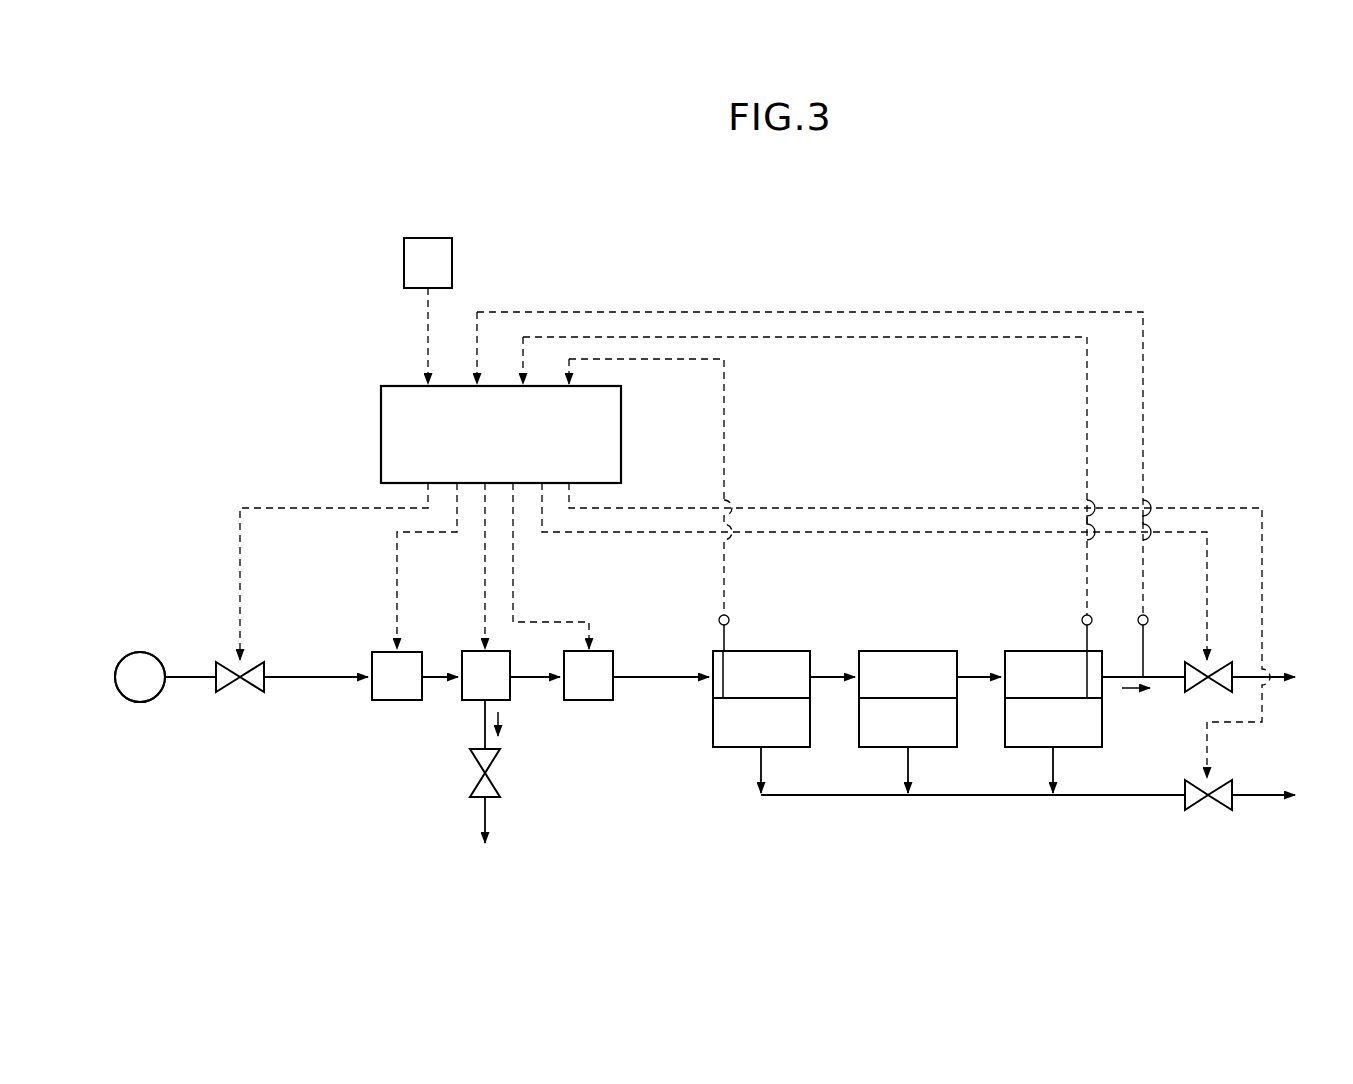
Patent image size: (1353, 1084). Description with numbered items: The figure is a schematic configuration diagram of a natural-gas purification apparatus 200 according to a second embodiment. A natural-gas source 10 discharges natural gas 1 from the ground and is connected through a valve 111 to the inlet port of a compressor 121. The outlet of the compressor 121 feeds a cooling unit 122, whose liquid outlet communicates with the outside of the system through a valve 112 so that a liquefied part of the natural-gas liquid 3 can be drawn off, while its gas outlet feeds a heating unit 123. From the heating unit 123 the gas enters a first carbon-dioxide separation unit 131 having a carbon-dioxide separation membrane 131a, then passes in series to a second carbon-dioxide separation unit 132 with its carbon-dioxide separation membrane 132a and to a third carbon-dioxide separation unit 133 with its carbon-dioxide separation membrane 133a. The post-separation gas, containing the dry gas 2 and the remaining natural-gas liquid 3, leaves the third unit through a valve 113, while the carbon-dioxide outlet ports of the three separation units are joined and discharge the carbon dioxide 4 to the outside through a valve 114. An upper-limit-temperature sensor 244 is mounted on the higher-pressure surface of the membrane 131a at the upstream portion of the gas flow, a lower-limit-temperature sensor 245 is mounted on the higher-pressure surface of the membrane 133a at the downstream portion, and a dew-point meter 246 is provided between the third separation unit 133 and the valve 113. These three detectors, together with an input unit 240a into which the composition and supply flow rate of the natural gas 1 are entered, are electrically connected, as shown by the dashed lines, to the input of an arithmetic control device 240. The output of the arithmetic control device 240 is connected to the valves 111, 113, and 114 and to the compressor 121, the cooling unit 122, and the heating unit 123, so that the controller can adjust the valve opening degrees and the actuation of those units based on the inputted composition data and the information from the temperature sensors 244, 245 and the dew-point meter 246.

The natural gas 1 is at (141, 665).
The dry gas 2 is at (1135, 752).
The natural-gas liquid 3 is at (688, 697).
The carbon dioxide 4 is at (1090, 817).
The natural-gas source 10 is at (140, 702).
The valve 111 is at (262, 690).
The valve 112 is at (500, 790).
The valve 113 is at (1225, 660).
The valve 114 is at (1228, 808).
The compressor 121 is at (397, 702).
The cooling unit 122 is at (510, 690).
The heating unit 123 is at (608, 652).
The first carbon-dioxide separation unit 131 is at (757, 650).
The carbon-dioxide separation membrane 131a is at (778, 697).
The second carbon-dioxide separation unit 132 is at (895, 650).
The carbon-dioxide separation membrane 132a is at (918, 697).
The third carbon-dioxide separation unit 133 is at (1050, 650).
The carbon-dioxide separation membrane 133a is at (1040, 697).
The natural-gas purification apparatus 200 is at (817, 288).
The arithmetic control device 240 is at (380, 428).
The input unit 240a is at (403, 262).
The upper-limit-temperature sensor 244 is at (720, 614).
The lower-limit-temperature sensor 245 is at (1090, 614).
The dew-point meter 246 is at (1146, 614).